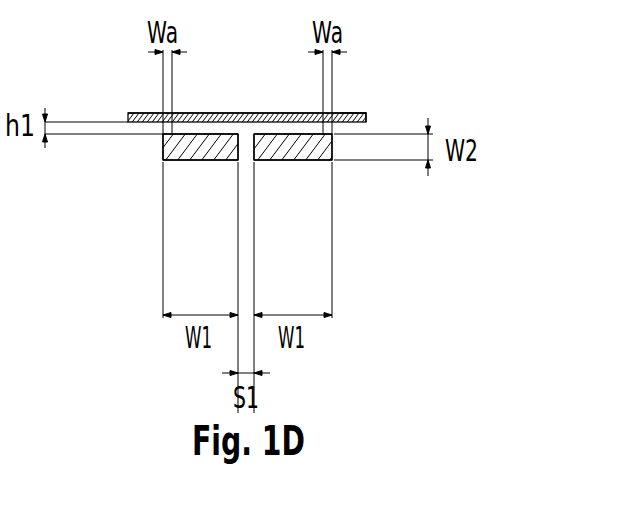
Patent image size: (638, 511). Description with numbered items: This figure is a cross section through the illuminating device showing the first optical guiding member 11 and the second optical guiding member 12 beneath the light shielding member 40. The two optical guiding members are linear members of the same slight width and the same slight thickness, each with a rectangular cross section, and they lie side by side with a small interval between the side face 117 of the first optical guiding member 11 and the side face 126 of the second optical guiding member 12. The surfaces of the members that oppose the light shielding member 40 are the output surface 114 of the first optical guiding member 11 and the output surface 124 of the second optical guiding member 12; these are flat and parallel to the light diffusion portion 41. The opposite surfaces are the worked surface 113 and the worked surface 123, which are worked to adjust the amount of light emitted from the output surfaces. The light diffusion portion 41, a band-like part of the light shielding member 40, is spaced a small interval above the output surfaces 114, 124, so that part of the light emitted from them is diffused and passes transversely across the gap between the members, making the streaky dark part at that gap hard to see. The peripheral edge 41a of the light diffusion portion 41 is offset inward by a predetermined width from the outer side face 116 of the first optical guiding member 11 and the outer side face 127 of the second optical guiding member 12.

The light shielding member 40 is at (137, 113).
The light diffusion portion 41 is at (246, 113).
The peripheral edge of the light diffusion portion 41a is at (344, 113).
The second optical guiding member 12 is at (163, 147).
The worked surface of the second optical guiding member 123 is at (181, 134).
The output surface of the second optical guiding member 124 is at (186, 161).
The side face of the second optical guiding member 126 is at (239, 150).
The side face of the second optical guiding member 127 is at (162, 158).
The first optical guiding member 11 is at (333, 148).
The worked surface of the first optical guiding member 113 is at (303, 134).
The output surface of the first optical guiding member 114 is at (292, 161).
The side face of the first optical guiding member 116 is at (333, 153).
The side face of the first optical guiding member 117 is at (253, 152).